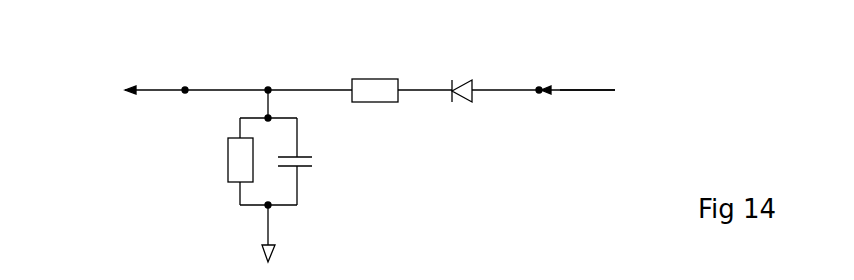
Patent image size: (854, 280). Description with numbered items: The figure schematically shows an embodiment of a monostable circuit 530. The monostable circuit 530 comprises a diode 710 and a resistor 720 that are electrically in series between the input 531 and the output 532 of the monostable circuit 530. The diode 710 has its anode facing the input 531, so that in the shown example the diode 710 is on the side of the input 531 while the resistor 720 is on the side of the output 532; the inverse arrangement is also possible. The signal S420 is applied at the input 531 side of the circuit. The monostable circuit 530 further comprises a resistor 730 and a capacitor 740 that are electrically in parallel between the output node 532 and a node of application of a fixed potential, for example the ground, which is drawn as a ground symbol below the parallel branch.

The monostable circuit 530 is at (117, 155).
The input 531 is at (540, 93).
The output 532 is at (185, 88).
The diode 710 is at (463, 102).
The resistor 720 is at (376, 96).
The resistor 730 is at (228, 166).
The capacitor 740 is at (312, 168).
The input signal S420 is at (599, 78).